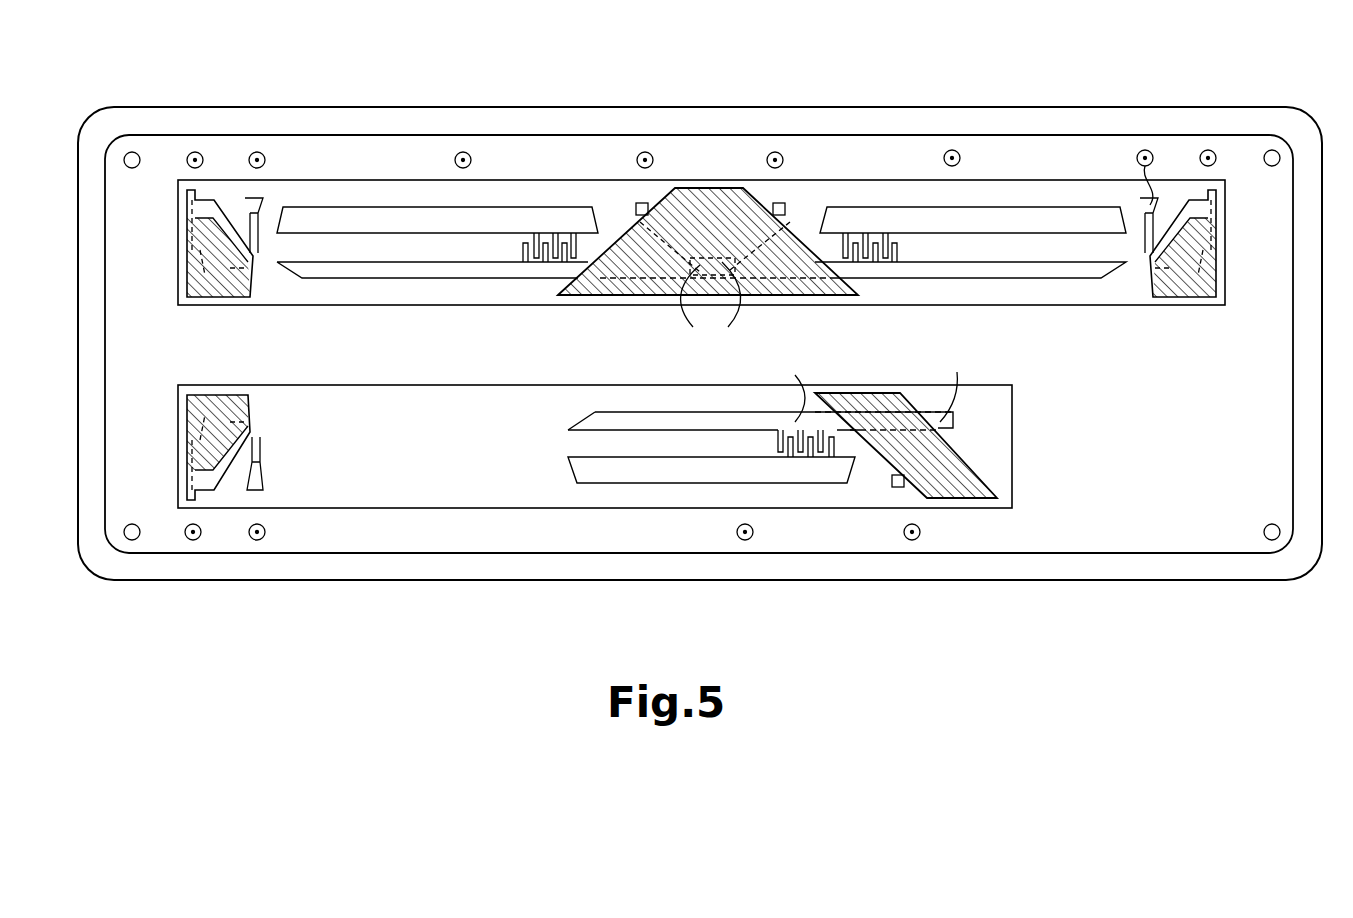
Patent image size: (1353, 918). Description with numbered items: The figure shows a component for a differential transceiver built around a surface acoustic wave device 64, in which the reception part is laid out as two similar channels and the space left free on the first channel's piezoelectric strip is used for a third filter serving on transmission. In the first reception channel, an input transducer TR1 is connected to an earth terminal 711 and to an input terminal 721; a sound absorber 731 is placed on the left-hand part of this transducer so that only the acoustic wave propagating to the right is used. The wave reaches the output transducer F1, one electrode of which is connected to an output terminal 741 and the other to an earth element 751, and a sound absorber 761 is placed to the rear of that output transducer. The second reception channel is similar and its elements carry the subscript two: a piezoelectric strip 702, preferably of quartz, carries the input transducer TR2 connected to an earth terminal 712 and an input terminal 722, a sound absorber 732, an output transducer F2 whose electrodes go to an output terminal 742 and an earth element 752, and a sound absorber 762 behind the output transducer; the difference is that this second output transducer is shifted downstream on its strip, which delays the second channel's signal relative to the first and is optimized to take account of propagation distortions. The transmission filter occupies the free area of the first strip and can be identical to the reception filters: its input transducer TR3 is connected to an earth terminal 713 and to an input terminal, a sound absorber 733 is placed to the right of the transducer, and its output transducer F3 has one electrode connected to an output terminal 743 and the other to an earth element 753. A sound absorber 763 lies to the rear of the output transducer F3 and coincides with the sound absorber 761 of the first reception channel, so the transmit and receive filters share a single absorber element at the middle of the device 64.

The surface acoustic wave device 64 is at (612, 584).
The earth terminal 711 is at (200, 207).
The input terminal 721 is at (252, 207).
The output terminal 741 is at (463, 220).
The earth element 751 is at (642, 203).
The earth element 753 is at (780, 203).
The output terminal 743 is at (948, 218).
The earth terminal 713 is at (1200, 205).
The sound absorber 731 is at (203, 290).
The sound absorber 733 is at (1197, 283).
The sound absorber 732 is at (195, 407).
The input transducer TR1 is at (262, 227).
The input transducer TR2 is at (263, 453).
The input transducer TR3 is at (1140, 240).
The output transducer F1 is at (487, 217).
The output transducer F2 is at (596, 472).
The output transducer F3 is at (986, 217).
The sound absorber 761 is at (603, 293).
The sound absorber 763 is at (815, 296).
The sound absorber 762 is at (877, 425).
The piezoelectric strip 702 is at (993, 420).
The earth terminal 712 is at (205, 485).
The input terminal 722 is at (250, 485).
The output terminal 742 is at (742, 470).
The earth element 752 is at (896, 487).